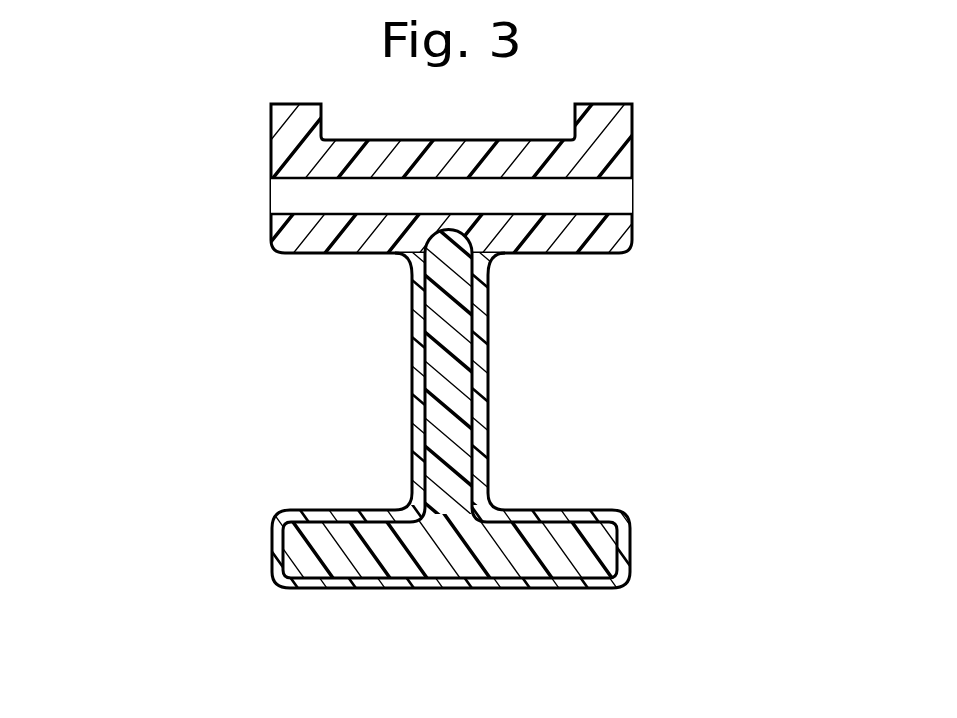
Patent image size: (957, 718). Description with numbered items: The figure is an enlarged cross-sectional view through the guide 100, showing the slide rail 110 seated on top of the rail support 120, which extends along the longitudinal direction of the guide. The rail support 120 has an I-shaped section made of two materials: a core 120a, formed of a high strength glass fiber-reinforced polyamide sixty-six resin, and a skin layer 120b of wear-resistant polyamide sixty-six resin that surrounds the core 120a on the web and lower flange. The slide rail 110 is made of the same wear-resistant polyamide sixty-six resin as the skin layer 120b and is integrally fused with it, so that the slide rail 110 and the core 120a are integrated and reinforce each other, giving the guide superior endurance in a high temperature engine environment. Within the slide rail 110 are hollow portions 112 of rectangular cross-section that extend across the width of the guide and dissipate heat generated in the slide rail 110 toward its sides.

The composite structural member 100 is at (238, 322).
The slide rail 110 is at (621, 155).
The hollow portions 112 is at (611, 199).
The rail support 120 is at (487, 386).
The core 120a is at (455, 375).
The skin layer 120b is at (481, 449).